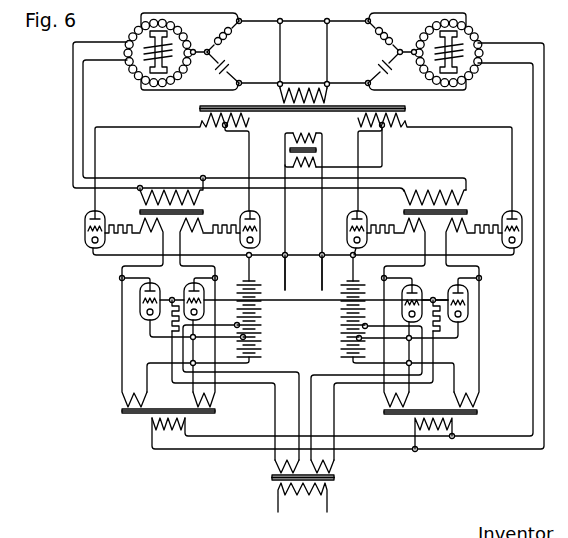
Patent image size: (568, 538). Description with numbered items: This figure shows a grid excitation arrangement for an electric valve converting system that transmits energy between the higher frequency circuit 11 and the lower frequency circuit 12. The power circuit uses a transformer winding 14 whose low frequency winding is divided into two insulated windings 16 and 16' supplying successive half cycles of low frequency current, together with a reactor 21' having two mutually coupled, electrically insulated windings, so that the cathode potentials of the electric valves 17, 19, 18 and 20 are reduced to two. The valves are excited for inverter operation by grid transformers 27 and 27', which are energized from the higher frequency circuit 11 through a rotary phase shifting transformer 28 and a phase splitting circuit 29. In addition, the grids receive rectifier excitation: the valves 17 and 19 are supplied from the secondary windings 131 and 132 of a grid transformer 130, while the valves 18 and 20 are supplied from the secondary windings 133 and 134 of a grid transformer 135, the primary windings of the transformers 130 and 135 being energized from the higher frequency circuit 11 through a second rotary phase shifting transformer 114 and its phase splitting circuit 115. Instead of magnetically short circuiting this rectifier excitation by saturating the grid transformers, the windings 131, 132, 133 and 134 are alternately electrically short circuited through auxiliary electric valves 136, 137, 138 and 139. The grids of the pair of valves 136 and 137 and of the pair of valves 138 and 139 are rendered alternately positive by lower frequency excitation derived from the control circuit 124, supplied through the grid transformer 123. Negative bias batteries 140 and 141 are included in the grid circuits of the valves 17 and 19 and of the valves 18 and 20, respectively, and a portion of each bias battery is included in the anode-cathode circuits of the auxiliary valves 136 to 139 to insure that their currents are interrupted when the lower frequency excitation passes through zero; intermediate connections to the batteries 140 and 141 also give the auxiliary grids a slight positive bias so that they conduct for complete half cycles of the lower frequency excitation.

The rotary phase shifting transformer 28 is at (132, 74).
The phase splitting circuit 29 is at (229, 44).
The higher frequency circuit 11 is at (281, 57).
The phase splitting circuit 115 is at (383, 41).
The rotary phase shifting transformer 114 is at (479, 74).
The transformer winding 14 is at (200, 109).
The transformer winding 16 is at (240, 122).
The transformer winding 16' is at (367, 122).
The reactor 21' is at (286, 150).
The grid transformer 27 is at (162, 228).
The grid transformer 27' is at (423, 234).
The electric valve 17 is at (85, 228).
The electric valve 19 is at (241, 220).
The electric valve 18 is at (348, 220).
The electric valve 20 is at (503, 222).
The lower frequency circuit 12 is at (286, 271).
The electric valve 136 is at (140, 293).
The electric valve 137 is at (187, 288).
The electric valve 138 is at (416, 291).
The electric valve 139 is at (468, 295).
The negative bias battery 140 is at (258, 309).
The negative bias battery 141 is at (338, 328).
The secondary winding 131 is at (122, 391).
The secondary winding 132 is at (215, 393).
The grid transformer 130 is at (122, 412).
The secondary winding 133 is at (384, 396).
The secondary winding 134 is at (479, 393).
The grid transformer 135 is at (477, 412).
The grid transformer 123 is at (334, 478).
The control circuit 124 is at (312, 519).